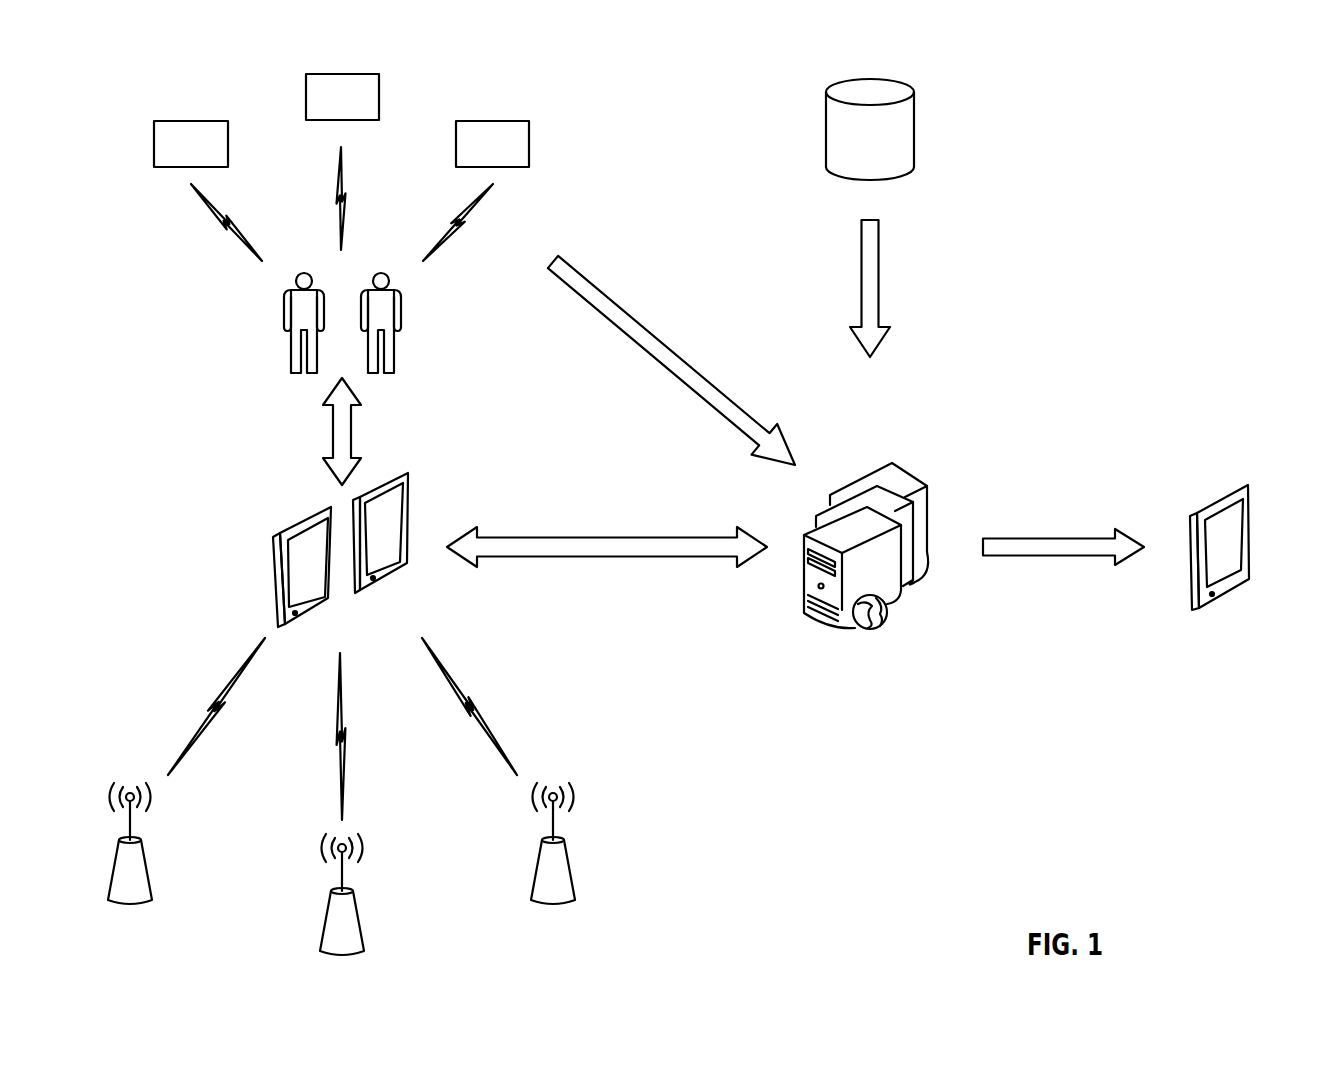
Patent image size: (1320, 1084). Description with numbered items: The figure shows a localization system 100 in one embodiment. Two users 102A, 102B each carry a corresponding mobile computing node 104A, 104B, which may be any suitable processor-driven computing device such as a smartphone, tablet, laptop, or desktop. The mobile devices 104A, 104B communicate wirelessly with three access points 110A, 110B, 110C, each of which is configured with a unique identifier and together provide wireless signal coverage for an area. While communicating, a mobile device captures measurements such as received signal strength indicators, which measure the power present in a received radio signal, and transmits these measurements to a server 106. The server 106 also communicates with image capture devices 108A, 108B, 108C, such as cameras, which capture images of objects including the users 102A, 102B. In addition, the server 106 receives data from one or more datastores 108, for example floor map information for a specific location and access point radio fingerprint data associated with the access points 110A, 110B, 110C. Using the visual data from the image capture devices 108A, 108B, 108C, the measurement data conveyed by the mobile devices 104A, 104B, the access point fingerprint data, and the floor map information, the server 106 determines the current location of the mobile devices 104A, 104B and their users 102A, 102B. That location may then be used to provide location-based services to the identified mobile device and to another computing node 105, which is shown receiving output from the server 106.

The system environment 100 is at (1219, 120).
The user 102A is at (283, 310).
The user 102B is at (401, 322).
The mobile computing node 104A is at (273, 553).
The mobile computing node 104B is at (412, 495).
The computing node 105 is at (1216, 501).
The server 106 is at (899, 480).
The datastore 108 is at (916, 128).
The image capture device 108A is at (202, 121).
The image capture device 108B is at (350, 74).
The image capture device 108C is at (502, 121).
The access point 110A is at (148, 868).
The access point 110B is at (360, 920).
The access point 110C is at (570, 868).